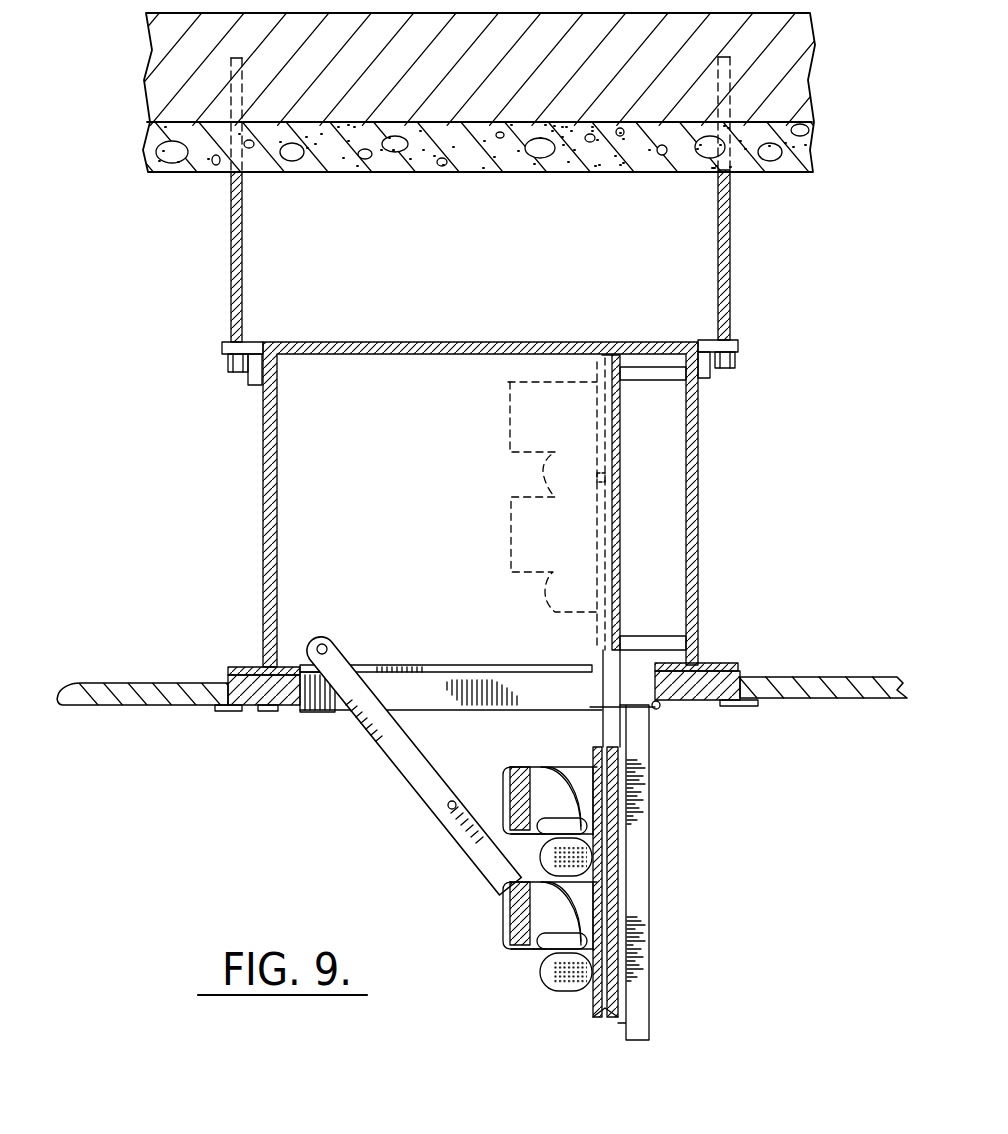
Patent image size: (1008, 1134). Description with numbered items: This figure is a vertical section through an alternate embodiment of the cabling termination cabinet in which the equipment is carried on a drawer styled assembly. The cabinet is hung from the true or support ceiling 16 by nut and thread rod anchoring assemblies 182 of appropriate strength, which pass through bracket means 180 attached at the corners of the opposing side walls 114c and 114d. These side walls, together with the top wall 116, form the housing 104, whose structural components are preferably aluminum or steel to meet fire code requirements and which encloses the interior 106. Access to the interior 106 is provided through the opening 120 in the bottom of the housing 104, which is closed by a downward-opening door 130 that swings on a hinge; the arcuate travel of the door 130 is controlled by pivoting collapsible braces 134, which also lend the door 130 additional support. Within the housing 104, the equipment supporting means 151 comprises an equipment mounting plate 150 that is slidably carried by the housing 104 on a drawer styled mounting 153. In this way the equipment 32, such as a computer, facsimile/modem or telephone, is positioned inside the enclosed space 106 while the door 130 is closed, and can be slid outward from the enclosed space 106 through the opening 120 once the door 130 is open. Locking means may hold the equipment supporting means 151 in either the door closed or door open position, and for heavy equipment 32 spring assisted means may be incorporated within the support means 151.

The support ceiling 16 is at (812, 150).
The nut and thread rod anchoring assemblies 182 is at (730, 282).
The bracket means 180 is at (740, 342).
The top wall 116 is at (438, 342).
The interior 106 is at (480, 477).
The equipment mounting plate 150 is at (605, 472).
The drawer styled mounting 153 is at (645, 636).
The equipment 32 is at (500, 574).
The housing 104 is at (721, 542).
The side wall 114c is at (265, 590).
The side wall 114d is at (700, 630).
The opening 120 is at (333, 712).
The pivoting collapsible braces 134 is at (425, 778).
The door 130 is at (632, 843).
The equipment supporting means 151 is at (573, 1019).